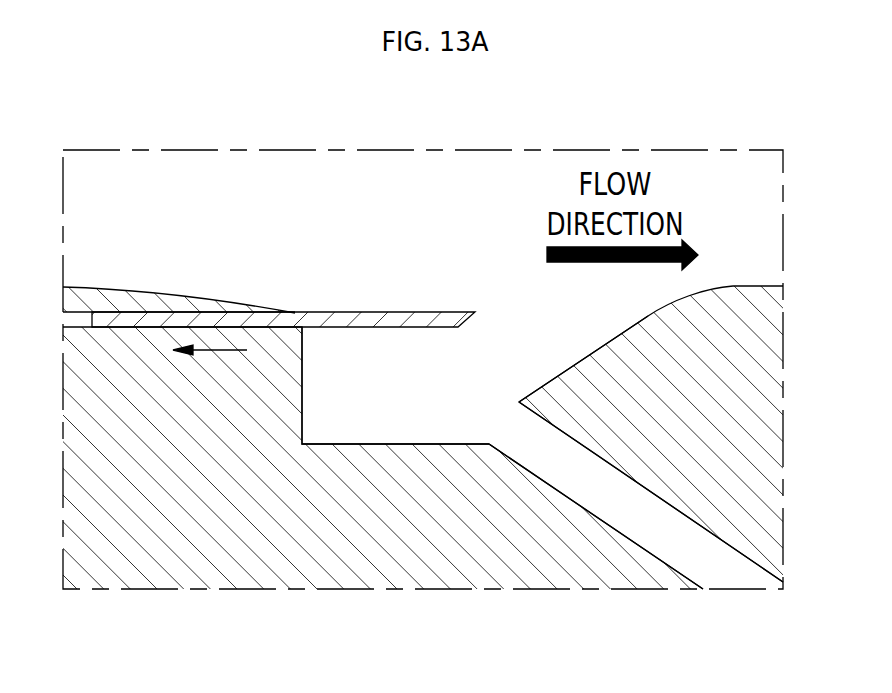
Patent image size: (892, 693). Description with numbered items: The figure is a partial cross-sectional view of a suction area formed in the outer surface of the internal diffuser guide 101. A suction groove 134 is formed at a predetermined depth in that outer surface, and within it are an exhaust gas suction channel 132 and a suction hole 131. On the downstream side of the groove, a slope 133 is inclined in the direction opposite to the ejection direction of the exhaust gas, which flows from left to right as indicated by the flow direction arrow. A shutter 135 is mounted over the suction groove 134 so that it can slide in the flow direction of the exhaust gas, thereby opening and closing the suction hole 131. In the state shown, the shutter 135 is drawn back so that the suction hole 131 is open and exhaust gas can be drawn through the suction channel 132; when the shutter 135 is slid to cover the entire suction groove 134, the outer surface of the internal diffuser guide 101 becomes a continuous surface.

The internal diffuser guide 101 is at (184, 297).
The suction hole 131 is at (507, 432).
The exhaust gas suction channel 132 is at (653, 542).
The slope 133 is at (580, 358).
The suction groove 134 is at (357, 412).
The shutter 135 is at (376, 312).